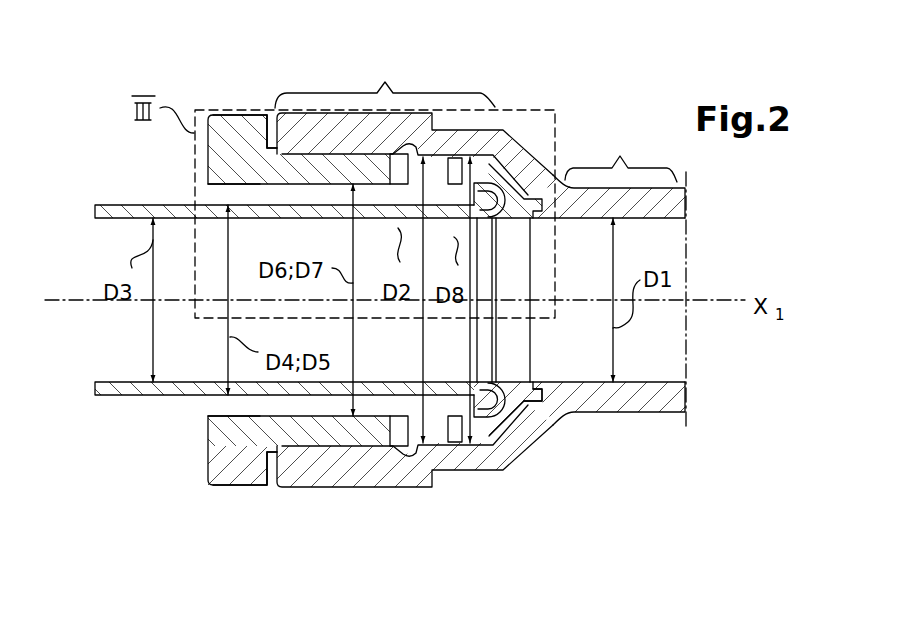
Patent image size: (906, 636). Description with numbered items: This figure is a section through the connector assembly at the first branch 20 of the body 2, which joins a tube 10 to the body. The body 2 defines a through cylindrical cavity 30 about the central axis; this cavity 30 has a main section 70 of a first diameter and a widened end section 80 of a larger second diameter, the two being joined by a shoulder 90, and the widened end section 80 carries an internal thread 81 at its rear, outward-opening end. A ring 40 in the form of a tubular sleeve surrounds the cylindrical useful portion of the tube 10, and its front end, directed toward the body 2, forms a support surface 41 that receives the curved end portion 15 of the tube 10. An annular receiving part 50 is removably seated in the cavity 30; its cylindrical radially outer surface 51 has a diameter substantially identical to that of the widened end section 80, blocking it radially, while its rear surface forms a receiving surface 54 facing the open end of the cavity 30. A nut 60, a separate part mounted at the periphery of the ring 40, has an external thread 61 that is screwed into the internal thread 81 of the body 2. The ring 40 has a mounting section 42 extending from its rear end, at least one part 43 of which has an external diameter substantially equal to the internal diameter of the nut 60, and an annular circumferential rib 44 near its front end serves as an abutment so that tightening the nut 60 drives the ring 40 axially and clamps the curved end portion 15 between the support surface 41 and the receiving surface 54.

The body 2 is at (656, 415).
The tube 10 is at (117, 205).
The curved end portion 15 is at (480, 173).
The first branch 20 is at (613, 415).
The cavity 30 is at (670, 368).
The ring 40 is at (222, 197).
The support surface 41 is at (502, 404).
The mounting section 42 is at (245, 133).
The part of the mounting section 43 is at (240, 300).
The circumferential rib 44 is at (443, 443).
The receiving part 50 is at (507, 198).
The radially outer surface 51 is at (481, 446).
The receiving surface 54 is at (486, 446).
The nut 60 is at (237, 488).
The thread 61 is at (343, 142).
The main section 70 is at (621, 157).
The widened end section 80 is at (385, 83).
The internal thread 81 is at (405, 300).
The shoulder 90 is at (511, 170).